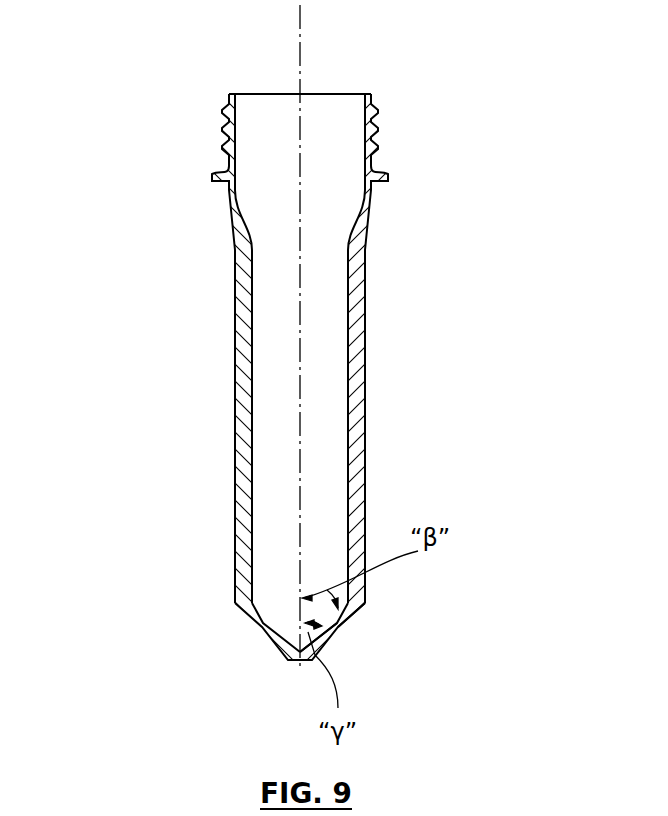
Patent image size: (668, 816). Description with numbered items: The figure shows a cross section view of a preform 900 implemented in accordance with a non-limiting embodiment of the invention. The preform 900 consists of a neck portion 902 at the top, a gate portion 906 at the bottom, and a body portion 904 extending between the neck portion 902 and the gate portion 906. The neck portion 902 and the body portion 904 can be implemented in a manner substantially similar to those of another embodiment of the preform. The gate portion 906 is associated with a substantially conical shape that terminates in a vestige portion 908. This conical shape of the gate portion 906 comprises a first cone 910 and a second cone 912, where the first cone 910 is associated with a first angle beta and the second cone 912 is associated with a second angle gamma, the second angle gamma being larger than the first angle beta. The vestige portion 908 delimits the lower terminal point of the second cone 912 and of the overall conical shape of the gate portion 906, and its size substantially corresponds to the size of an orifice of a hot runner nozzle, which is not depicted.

The preform 900 is at (505, 143).
The neck portion 902 is at (229, 94).
The body portion 904 is at (158, 600).
The gate portion 906 is at (290, 660).
The vestige portion 908 is at (301, 661).
The first cone 910 is at (360, 619).
The second cone 912 is at (312, 650).